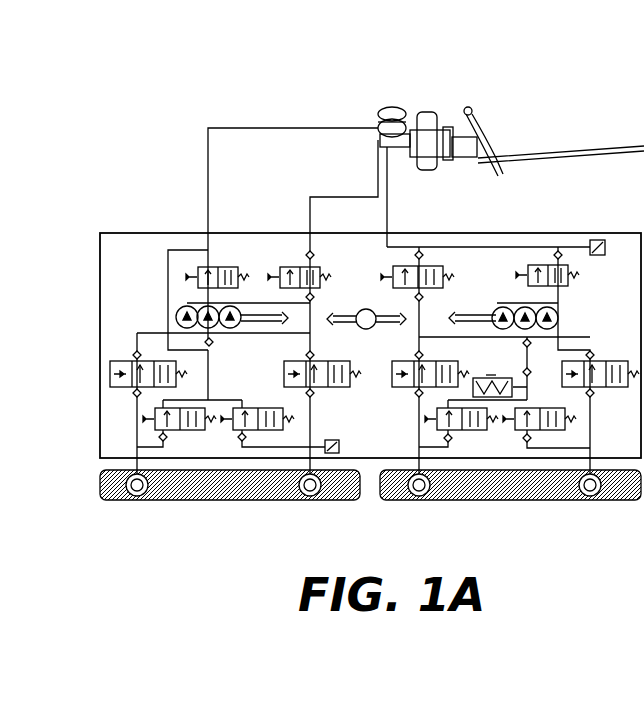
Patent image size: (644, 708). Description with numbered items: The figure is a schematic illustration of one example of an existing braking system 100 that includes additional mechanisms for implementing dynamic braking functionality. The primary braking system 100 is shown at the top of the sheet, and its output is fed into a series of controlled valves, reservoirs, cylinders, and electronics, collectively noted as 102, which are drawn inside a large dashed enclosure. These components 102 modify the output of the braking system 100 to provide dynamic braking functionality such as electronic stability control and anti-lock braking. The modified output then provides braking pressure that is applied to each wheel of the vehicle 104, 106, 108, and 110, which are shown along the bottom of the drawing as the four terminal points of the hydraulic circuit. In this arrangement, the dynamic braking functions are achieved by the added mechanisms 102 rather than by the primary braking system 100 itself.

The braking system 100 is at (366, 87).
The controlled valves, reservoirs, cylinders, and electronics 102 is at (150, 227).
The wheel of the vehicle 104 is at (150, 504).
The wheel of the vehicle 106 is at (322, 504).
The wheel of the vehicle 108 is at (432, 504).
The wheel of the vehicle 110 is at (603, 504).